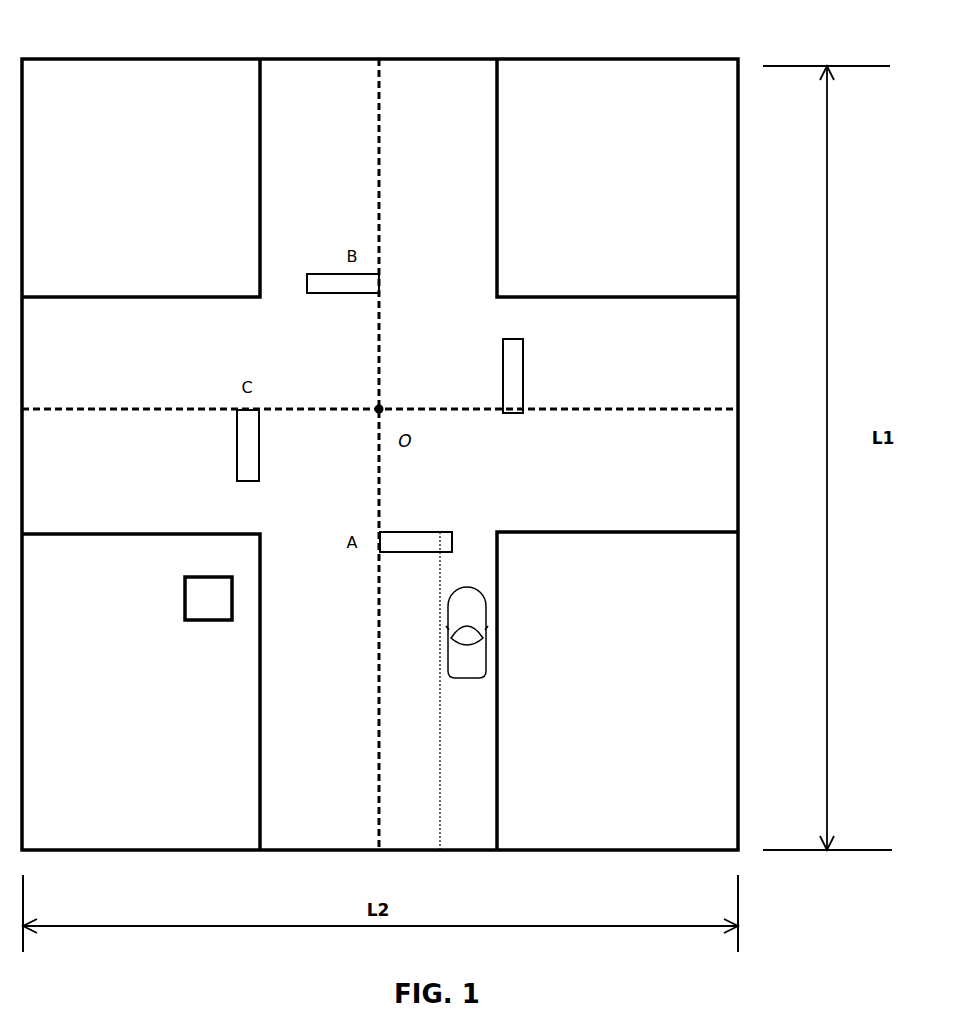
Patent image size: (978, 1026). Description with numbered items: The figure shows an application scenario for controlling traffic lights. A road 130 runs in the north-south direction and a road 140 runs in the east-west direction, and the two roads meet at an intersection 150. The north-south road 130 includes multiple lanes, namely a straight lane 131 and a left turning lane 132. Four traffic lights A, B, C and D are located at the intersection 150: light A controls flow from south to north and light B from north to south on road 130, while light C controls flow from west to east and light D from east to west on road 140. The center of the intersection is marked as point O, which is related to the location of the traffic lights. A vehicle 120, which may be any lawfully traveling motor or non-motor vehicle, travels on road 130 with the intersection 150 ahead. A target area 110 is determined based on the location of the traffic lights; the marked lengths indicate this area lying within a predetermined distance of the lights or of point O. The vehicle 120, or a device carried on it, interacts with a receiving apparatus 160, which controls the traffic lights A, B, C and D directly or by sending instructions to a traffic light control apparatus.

The target area 110 is at (632, 58).
The vehicle 120 is at (487, 610).
The road 130 is at (498, 720).
The straight lane 131 is at (466, 803).
The left turning lane 132 is at (412, 788).
The road 140 is at (68, 296).
The intersection 150 is at (480, 332).
The receiving apparatus 160 is at (207, 597).